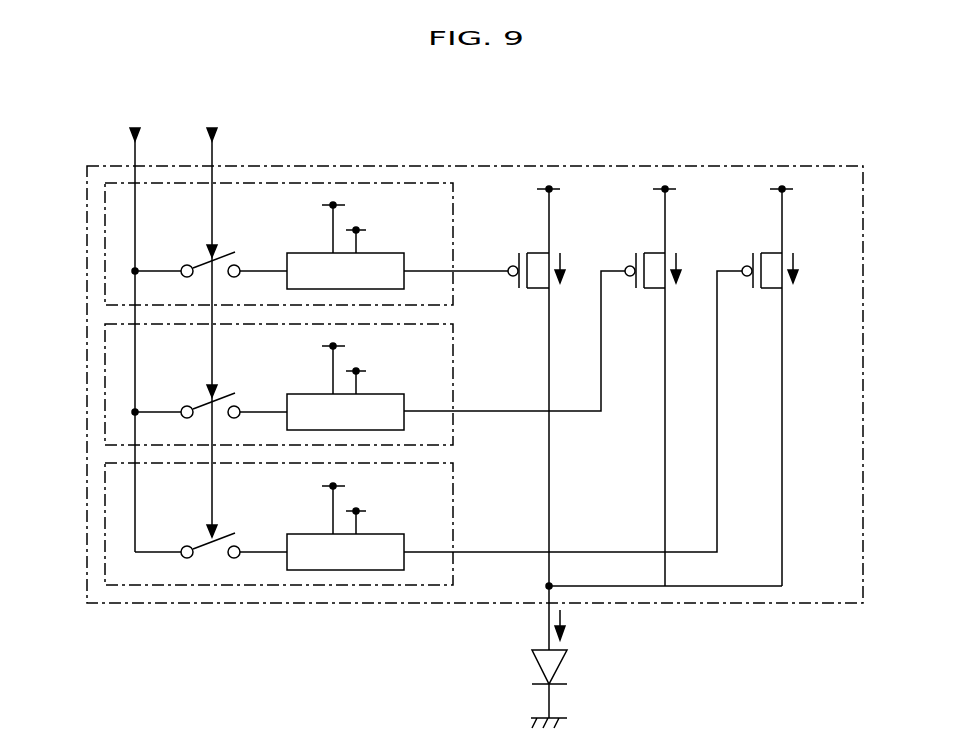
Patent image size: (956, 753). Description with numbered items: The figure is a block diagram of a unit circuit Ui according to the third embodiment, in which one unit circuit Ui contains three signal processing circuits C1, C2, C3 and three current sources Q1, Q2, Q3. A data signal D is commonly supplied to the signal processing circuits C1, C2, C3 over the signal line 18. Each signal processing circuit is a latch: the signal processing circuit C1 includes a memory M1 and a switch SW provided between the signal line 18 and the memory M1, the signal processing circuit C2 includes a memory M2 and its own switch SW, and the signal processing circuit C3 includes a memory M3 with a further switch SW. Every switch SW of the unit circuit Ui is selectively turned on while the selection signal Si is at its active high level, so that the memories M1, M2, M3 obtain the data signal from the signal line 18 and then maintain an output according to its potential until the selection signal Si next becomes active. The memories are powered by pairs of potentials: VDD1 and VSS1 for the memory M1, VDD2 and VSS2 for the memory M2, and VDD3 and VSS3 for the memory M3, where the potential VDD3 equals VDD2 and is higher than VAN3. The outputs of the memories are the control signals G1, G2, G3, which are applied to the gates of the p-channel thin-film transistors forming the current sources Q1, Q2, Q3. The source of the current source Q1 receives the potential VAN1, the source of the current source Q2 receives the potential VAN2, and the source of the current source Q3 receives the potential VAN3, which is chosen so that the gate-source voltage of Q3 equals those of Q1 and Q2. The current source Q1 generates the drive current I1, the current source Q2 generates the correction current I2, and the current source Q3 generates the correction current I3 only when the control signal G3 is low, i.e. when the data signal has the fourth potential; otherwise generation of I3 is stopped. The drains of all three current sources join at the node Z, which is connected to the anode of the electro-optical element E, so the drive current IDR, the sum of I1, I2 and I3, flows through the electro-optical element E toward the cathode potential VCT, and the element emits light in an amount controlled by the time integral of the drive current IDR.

The signal line 18 is at (135, 158).
The selection signal Si is at (208, 319).
The unit circuit Ui is at (865, 393).
The signal processing circuit C1 is at (105, 240).
The signal processing circuit C2 is at (105, 381).
The signal processing circuit C3 is at (105, 521).
The switch SW is at (184, 265).
The memory M1 is at (290, 253).
The memory M2 is at (290, 394).
The memory M3 is at (290, 534).
The potential VDD1 is at (377, 223).
The potential VDD2 is at (377, 364).
The potential VDD3 is at (377, 504).
The potential VSS1 is at (395, 236).
The potential VSS2 is at (395, 377).
The potential VSS3 is at (395, 517).
The control signal G1 is at (456, 287).
The control signal G2 is at (514, 355).
The control signal G3 is at (573, 425).
The current source Q1 is at (533, 290).
The current source Q2 is at (650, 290).
The current source Q3 is at (767, 290).
The potential VAN1 is at (576, 190).
The potential VAN2 is at (692, 190).
The potential VAN3 is at (809, 190).
The drive current I1 is at (572, 269).
The correction current I2 is at (688, 269).
The correction current I3 is at (805, 269).
The node Z is at (545, 586).
The drive current IDR is at (580, 625).
The electro-optical element E is at (533, 667).
The potential VCT is at (570, 721).